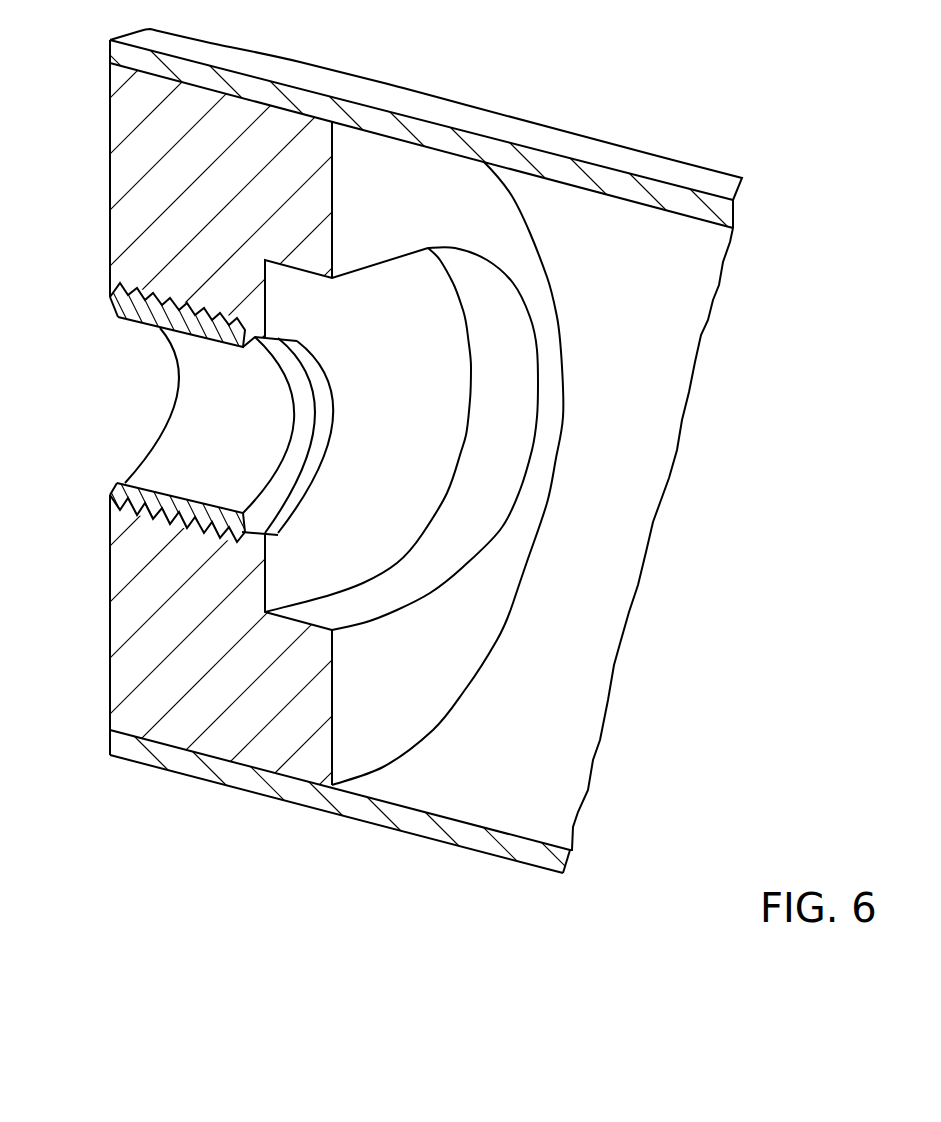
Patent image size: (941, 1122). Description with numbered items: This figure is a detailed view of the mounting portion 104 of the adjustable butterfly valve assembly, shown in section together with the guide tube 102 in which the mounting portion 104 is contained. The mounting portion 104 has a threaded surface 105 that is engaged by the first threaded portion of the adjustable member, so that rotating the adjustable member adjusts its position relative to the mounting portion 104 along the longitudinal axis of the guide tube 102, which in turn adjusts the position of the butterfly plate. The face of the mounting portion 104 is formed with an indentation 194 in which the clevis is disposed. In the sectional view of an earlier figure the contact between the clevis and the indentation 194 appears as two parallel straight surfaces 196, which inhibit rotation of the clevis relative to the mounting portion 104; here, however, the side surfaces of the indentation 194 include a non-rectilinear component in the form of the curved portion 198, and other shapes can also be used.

The guide tube 102 is at (402, 95).
The mounting portion 104 is at (150, 178).
The straight surfaces 196 is at (126, 262).
The threaded surface 105 is at (150, 318).
The indentation 194 is at (447, 427).
The curved portion 198 is at (650, 401).